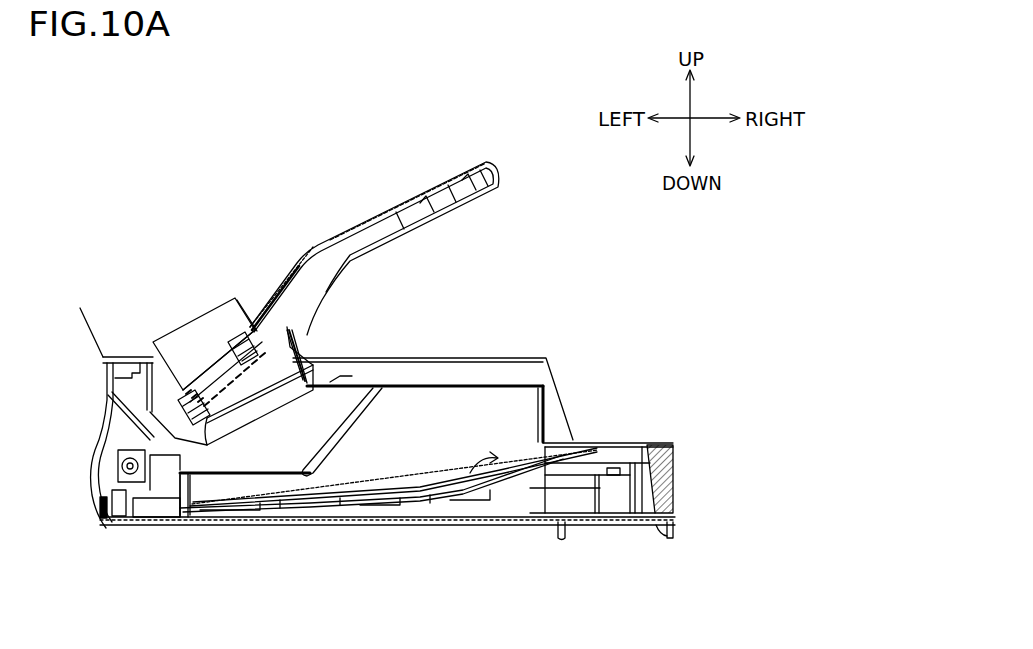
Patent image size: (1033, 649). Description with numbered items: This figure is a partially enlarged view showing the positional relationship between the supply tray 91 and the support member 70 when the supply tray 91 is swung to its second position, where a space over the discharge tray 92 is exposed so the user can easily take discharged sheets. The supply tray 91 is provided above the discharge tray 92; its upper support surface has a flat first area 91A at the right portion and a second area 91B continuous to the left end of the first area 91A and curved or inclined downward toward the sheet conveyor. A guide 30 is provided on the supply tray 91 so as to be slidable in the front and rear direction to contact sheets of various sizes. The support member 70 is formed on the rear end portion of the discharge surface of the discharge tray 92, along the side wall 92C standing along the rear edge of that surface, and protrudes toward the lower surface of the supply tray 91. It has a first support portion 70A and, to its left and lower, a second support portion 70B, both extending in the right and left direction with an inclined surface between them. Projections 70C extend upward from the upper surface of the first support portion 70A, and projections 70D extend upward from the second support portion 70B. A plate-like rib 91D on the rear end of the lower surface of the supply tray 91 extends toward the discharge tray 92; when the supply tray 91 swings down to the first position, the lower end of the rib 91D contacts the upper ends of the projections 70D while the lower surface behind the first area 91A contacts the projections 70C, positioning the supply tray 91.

The guide 30 is at (200, 330).
The support member 70 is at (510, 416).
The first support portion 70A is at (462, 397).
The second support portion 70B is at (262, 480).
The projection 70C is at (395, 385).
The projection 70D is at (310, 468).
The supply tray 91 is at (491, 160).
The first area 91A is at (375, 220).
The second area 91B is at (283, 283).
The rib 91D is at (297, 338).
The discharge tray 92 is at (468, 512).
The side wall 92C is at (343, 377).